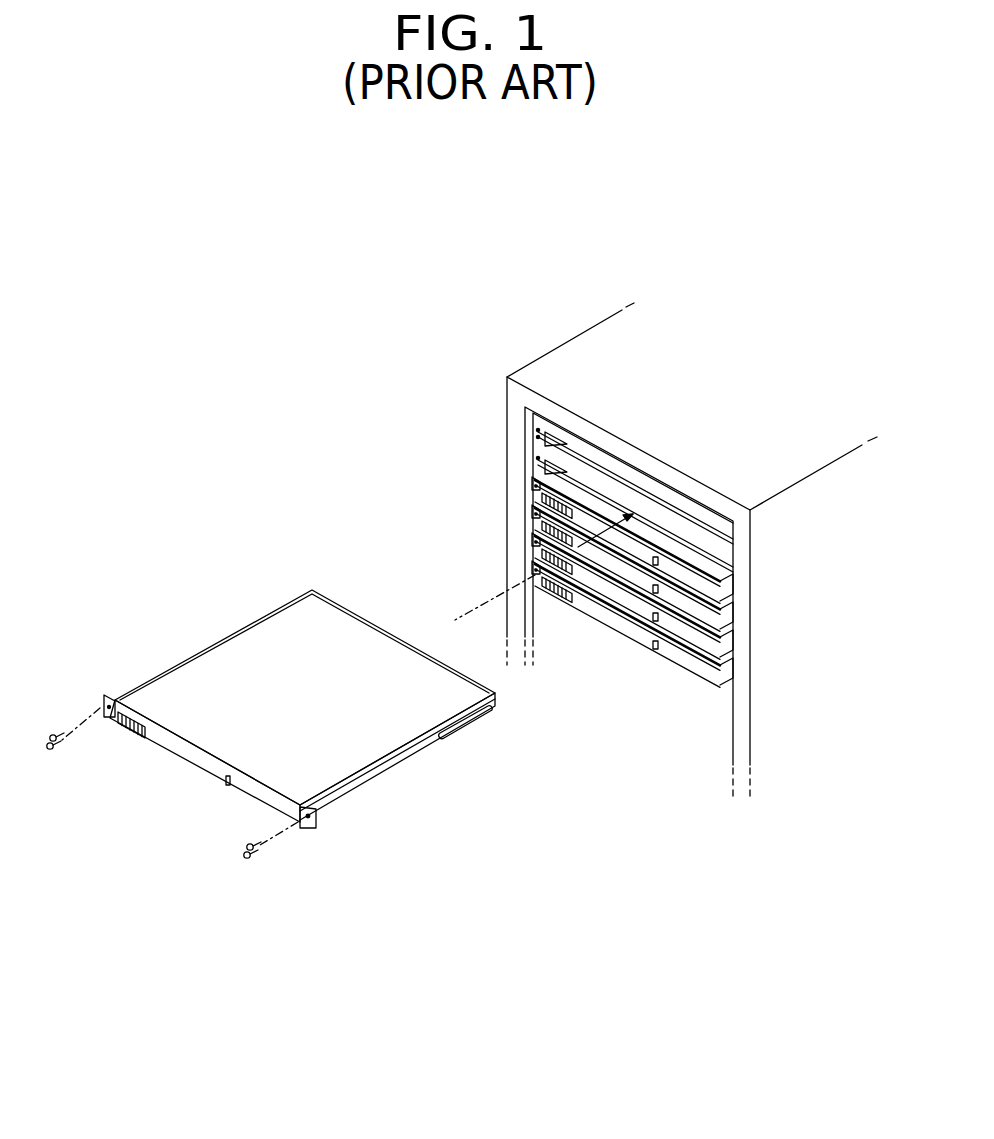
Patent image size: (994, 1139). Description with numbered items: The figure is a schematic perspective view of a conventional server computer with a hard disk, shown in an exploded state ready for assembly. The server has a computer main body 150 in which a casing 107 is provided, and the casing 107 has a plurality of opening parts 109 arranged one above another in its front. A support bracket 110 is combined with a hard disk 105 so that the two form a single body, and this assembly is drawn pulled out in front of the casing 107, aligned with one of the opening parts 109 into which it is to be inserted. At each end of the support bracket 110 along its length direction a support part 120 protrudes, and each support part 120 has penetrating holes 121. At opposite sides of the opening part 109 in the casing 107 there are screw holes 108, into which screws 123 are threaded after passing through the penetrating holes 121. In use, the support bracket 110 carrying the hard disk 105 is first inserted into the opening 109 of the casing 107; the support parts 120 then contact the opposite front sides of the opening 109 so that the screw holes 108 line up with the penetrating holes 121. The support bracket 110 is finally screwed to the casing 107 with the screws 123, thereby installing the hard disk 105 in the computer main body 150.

The computer main body 150 is at (472, 369).
The casing 107 is at (542, 493).
The screw holes 108 is at (538, 430).
The opening parts 109 is at (538, 458).
The support bracket 110 is at (540, 529).
The hard disk 105 is at (377, 740).
The support part 120 is at (317, 830).
The penetrating holes 121 is at (308, 828).
The screws 123 is at (247, 862).